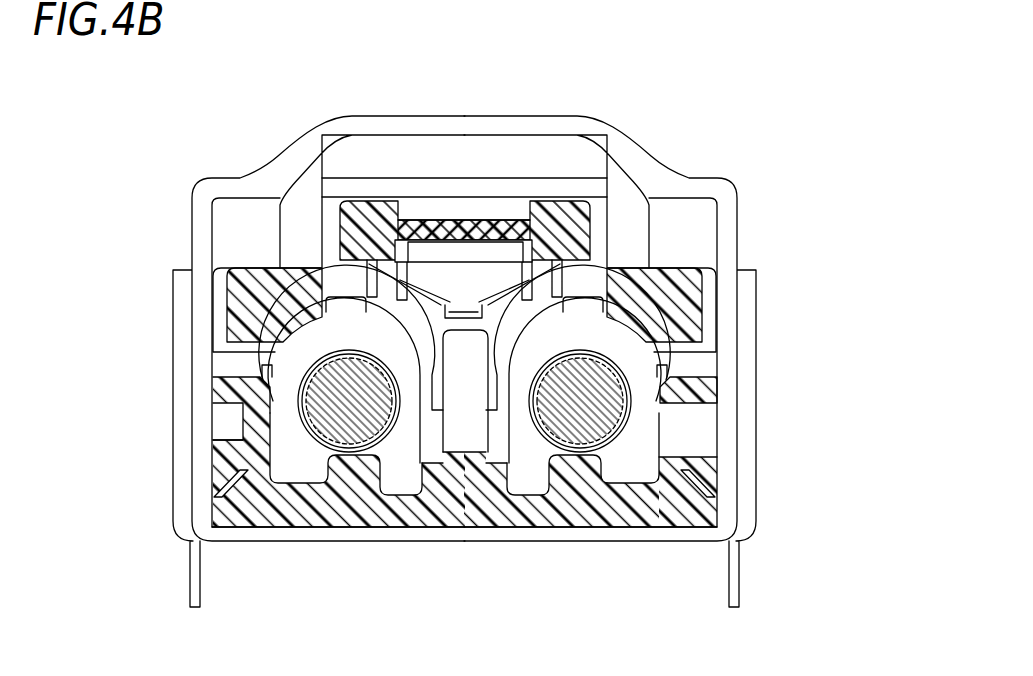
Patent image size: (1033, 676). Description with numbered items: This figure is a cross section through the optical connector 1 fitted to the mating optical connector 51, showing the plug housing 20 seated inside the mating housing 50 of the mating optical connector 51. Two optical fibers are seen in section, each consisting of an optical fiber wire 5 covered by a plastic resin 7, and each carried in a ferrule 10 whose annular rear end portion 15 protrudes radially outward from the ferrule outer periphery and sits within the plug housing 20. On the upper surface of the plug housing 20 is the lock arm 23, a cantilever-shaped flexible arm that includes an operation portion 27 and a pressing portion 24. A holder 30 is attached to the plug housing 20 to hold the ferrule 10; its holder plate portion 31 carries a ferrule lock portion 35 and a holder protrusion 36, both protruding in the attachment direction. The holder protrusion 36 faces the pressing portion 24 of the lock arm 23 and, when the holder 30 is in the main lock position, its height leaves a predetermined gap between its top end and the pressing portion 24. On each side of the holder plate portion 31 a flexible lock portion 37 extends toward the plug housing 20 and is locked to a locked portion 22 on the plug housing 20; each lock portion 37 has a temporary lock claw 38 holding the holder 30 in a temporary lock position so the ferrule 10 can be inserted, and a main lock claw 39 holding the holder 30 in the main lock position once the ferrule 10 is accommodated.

The optical connector 1 is at (646, 146).
The optical fiber wire 5 is at (323, 442).
The plastic resin 7 is at (261, 363).
The ferrule 10 is at (311, 363).
The annular rear end portion 15 is at (336, 337).
The plug housing 20 is at (710, 305).
The locked portion 22 is at (218, 470).
The lock arm 23 is at (502, 262).
The pressing portion 24 is at (462, 385).
The operation portion 27 is at (433, 225).
The holder 30 is at (595, 530).
The holder plate portion 31 is at (384, 528).
The ferrule lock portion 35 is at (287, 455).
The holder protrusion 36 is at (485, 240).
The lock portion 37 is at (227, 371).
The temporary lock claw 38 is at (234, 382).
The main lock claw 39 is at (232, 428).
The mating housing 50 is at (208, 177).
The mating optical connector 51 is at (726, 177).